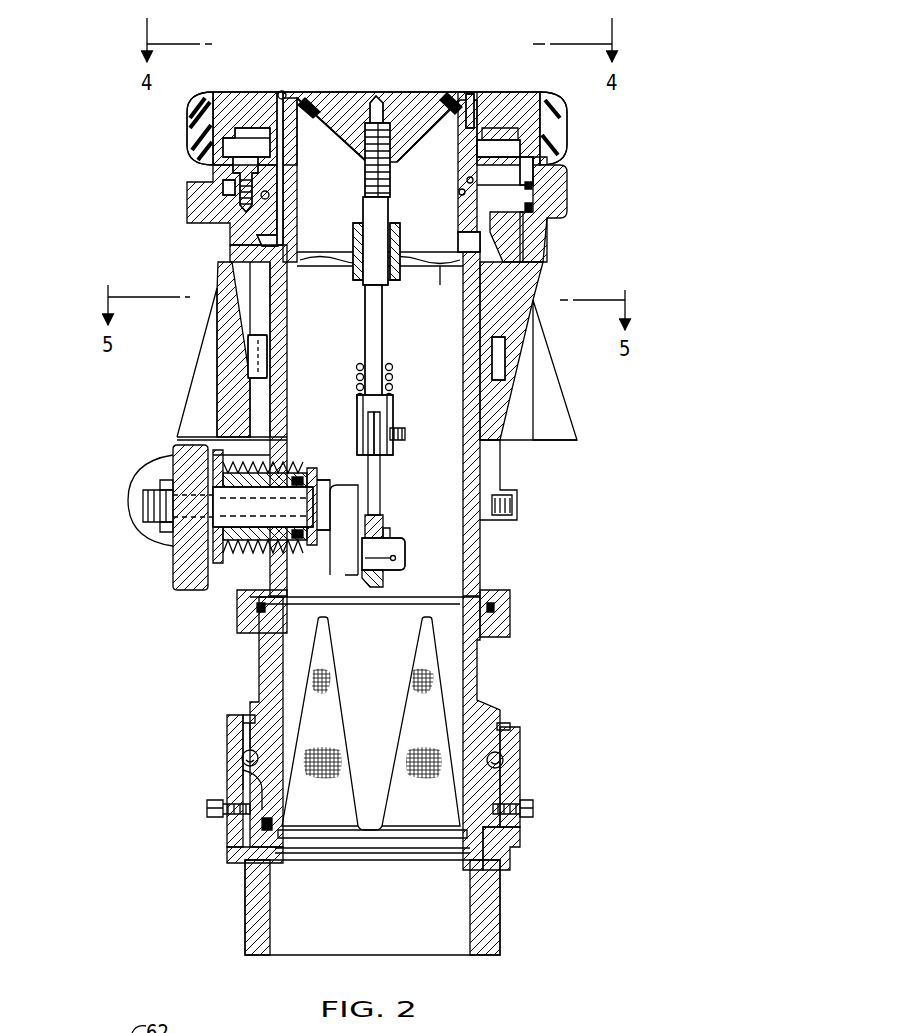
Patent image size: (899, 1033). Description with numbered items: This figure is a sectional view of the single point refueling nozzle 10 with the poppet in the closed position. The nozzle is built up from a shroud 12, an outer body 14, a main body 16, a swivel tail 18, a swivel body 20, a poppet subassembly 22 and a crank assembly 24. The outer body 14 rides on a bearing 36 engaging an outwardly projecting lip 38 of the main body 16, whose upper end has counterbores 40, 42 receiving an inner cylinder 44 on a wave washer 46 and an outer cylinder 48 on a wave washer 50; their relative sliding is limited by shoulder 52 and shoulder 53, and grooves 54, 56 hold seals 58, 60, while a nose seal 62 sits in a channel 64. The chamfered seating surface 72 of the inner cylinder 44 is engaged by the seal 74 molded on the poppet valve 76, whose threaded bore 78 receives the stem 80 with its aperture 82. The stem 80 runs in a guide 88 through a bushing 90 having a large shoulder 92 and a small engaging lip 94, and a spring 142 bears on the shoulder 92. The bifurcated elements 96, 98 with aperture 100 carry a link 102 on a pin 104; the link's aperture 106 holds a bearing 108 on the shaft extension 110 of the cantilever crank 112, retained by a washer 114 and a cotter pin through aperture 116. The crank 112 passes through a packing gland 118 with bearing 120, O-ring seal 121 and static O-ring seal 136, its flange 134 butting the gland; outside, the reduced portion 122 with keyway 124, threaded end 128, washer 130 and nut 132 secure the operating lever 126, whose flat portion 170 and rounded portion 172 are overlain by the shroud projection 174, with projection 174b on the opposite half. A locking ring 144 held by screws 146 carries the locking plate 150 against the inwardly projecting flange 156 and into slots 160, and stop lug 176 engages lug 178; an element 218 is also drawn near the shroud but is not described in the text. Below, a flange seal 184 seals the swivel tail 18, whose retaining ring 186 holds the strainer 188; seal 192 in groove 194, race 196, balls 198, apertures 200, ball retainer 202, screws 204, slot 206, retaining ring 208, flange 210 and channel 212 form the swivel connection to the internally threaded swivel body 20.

The single point refueling nozzle 10 is at (140, 230).
The shroud 12 is at (543, 286).
The outer body 14 is at (550, 173).
The main body 16 is at (485, 462).
The swivel tail 18 is at (480, 666).
The swivel body 20 is at (505, 907).
The poppet subassembly 22 is at (412, 88).
The crank assembly 24 is at (216, 539).
The bearing 36 is at (545, 226).
The outwardly projecting lip 38 is at (540, 200).
The counterbore 40 is at (458, 292).
The counterbore 42 is at (515, 272).
The inner cylinder 44 is at (458, 142).
The wave washer 46 is at (412, 282).
The outer cylinder 48 is at (472, 108).
The wave washer 50 is at (458, 242).
The shoulder 52 is at (258, 241).
The shoulder 53 is at (213, 196).
The annular groove 54 is at (268, 197).
The annular groove 56 is at (283, 200).
The seal 58 is at (458, 195).
The seal 60 is at (466, 182).
The nose seal 62 is at (285, 92).
The channel 64 is at (278, 95).
The chamfered seating surface 72 is at (305, 100).
The seal 74 is at (312, 118).
The poppet valve 76 is at (358, 96).
The internally threaded bore 78 is at (369, 132).
The stem 80 is at (384, 350).
The aperture 82 is at (366, 178).
The guide 88 is at (352, 242).
The bushing 90 is at (386, 280).
The shoulder 92 is at (355, 282).
The engaging lip 94 is at (402, 230).
The bifurcated element 96 is at (366, 456).
The bifurcated element 98 is at (390, 456).
The aperture 100 is at (402, 429).
The link 102 is at (382, 487).
The pin 104 is at (356, 440).
The aperture 106 is at (356, 582).
The bearing 108 is at (386, 582).
The shaft extension 110 is at (392, 550).
The cantilever crank 112 is at (340, 532).
The washer 114 is at (392, 535).
The aperture 116 is at (400, 562).
The packing gland 118 is at (302, 490).
The bearing 120 is at (246, 542).
The O-ring seal 121 is at (320, 494).
The reduced portion 122 is at (193, 535).
The keyway 124 is at (175, 510).
The operating lever 126 is at (130, 492).
The threaded end 128 is at (170, 500).
The washer 130 is at (175, 522).
The nut 132 is at (163, 484).
The flange 134 is at (317, 484).
The static O-ring seal 136 is at (246, 472).
The spring 142 is at (356, 382).
The locking ring 144 is at (535, 165).
The screws 146 is at (236, 174).
The locking plate 150 is at (225, 148).
The inwardly projecting flange 156 is at (510, 112).
The slots 160 is at (522, 146).
The flat portion 170 is at (183, 428).
The rounded portion 172 is at (192, 594).
The shroud projection 174 is at (183, 428).
The projection 174b is at (560, 434).
The stop lug 176 is at (264, 357).
The lug 178 is at (258, 338).
The flange seal 184 is at (494, 604).
The retaining ring 186 is at (262, 864).
The strainer 188 is at (387, 686).
The seal 192 is at (260, 830).
The annular groove 194 is at (462, 826).
The external groove 196 is at (258, 756).
The balls 198 is at (240, 760).
The angularly formed apertures 200 is at (245, 777).
The ball retainer 202 is at (522, 777).
The screws 204 is at (537, 812).
The slot 206 is at (240, 797).
The retaining ring 208 is at (512, 728).
The flange 210 is at (522, 847).
The channel 212 is at (505, 748).
The seal 218 is at (192, 112).